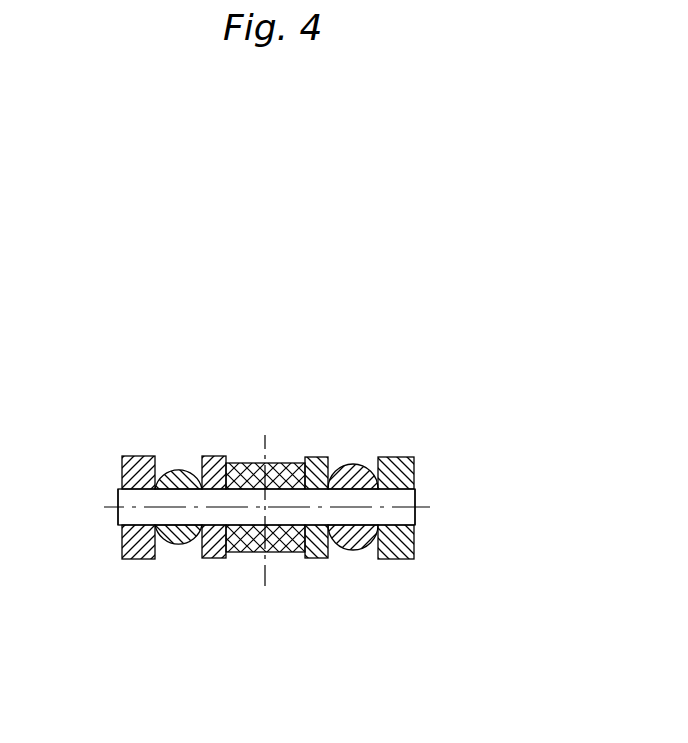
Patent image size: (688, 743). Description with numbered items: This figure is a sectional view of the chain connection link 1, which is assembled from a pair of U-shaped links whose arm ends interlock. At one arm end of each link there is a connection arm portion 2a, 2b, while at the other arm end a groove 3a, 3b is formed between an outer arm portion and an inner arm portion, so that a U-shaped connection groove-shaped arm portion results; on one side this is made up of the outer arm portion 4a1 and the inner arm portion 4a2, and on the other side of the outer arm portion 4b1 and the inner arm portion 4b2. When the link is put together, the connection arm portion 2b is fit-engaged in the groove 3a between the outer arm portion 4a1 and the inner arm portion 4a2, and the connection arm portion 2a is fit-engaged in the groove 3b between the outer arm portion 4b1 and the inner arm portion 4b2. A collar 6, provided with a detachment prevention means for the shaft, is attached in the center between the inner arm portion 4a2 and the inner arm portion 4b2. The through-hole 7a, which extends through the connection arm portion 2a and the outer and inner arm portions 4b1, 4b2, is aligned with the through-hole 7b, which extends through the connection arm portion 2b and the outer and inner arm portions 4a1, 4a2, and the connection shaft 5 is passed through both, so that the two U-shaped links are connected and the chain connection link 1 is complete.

The chain connection link 1 is at (414, 372).
The connection arm portion 2a is at (355, 467).
The connection arm portion 2b is at (180, 467).
The groove 3a is at (177, 558).
The groove 3b is at (355, 557).
The outer arm portion 4a1 is at (122, 558).
The inner arm portion 4a2 is at (212, 558).
The outer arm portion 4b1 is at (412, 560).
The inner arm portion 4b2 is at (313, 557).
The connection shaft 5 is at (247, 495).
The collar 6 is at (253, 557).
The through-hole 7a is at (118, 505).
The through-hole 7b is at (416, 503).